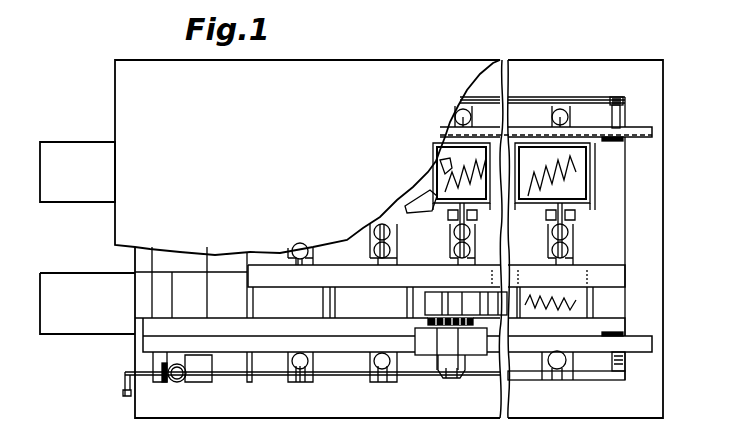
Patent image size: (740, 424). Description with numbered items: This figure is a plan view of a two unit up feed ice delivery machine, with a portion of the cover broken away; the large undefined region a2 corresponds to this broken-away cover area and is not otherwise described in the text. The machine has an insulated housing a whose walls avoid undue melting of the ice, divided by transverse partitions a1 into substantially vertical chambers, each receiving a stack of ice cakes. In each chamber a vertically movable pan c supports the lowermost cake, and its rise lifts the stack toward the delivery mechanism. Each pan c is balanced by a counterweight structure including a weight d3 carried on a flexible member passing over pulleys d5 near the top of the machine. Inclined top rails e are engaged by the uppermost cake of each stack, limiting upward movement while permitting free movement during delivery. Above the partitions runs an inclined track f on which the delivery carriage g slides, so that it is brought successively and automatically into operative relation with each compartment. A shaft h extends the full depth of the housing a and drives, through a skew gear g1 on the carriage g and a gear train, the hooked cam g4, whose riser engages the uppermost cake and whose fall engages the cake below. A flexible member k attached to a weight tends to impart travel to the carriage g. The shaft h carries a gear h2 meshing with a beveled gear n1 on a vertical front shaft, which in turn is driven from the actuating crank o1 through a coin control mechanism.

The housing a is at (663, 260).
The transverse partitions a1 is at (405, 296).
The upper frame block a2 is at (307, 157).
The vertically movable pan c is at (585, 210).
The weight d3 is at (612, 48).
The pulleys d5 is at (285, 372).
The inclined top rails e is at (436, 248).
The track f is at (652, 131).
The delivery carriage g is at (427, 345).
The skew gear g1 is at (452, 378).
The hooked cam g4 is at (443, 303).
The shaft h is at (530, 370).
The gear h2 is at (160, 385).
The flexible member k is at (597, 332).
The beveled gear n1 is at (183, 381).
The actuating crank o1 is at (122, 393).